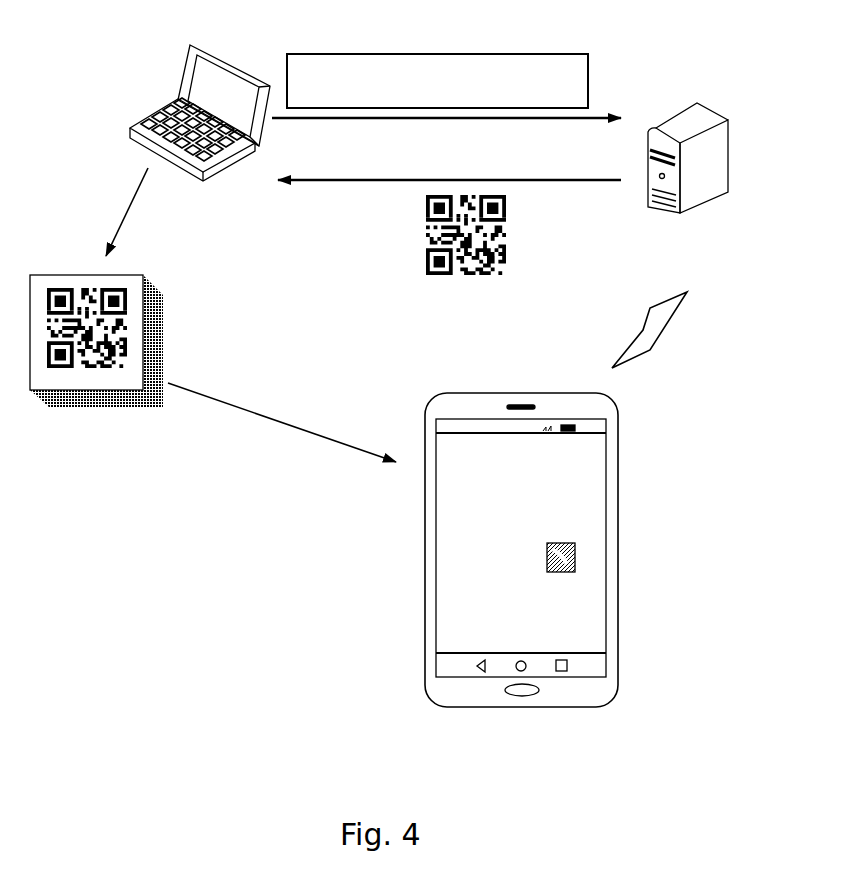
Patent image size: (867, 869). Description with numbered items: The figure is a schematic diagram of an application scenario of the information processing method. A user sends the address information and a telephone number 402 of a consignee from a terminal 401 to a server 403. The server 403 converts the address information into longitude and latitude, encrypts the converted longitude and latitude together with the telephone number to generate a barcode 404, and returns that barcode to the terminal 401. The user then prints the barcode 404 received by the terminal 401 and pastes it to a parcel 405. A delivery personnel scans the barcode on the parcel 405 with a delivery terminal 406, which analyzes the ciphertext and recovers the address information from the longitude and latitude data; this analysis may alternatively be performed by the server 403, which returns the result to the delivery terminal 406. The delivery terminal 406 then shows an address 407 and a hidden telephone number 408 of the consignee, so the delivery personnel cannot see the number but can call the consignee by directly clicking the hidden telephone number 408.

The terminal 401 is at (200, 128).
The address information and a telephone number 402 is at (442, 53).
The server 403 is at (688, 183).
The barcode 404 is at (505, 268).
The parcel 405 is at (96, 372).
The delivery terminal 406 is at (564, 584).
The address 407 is at (600, 487).
The hidden telephone number 408 is at (578, 557).